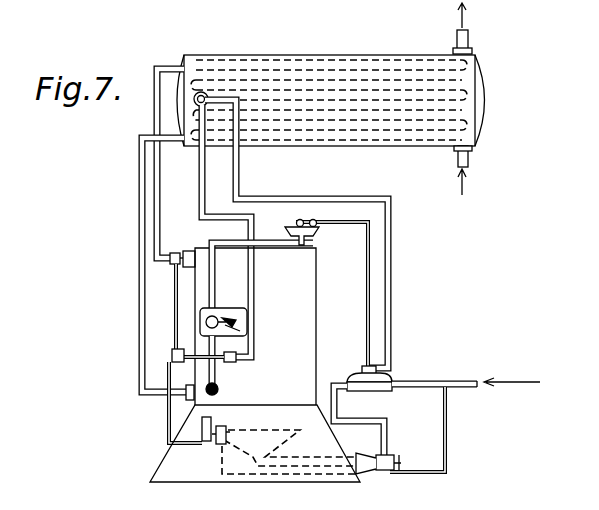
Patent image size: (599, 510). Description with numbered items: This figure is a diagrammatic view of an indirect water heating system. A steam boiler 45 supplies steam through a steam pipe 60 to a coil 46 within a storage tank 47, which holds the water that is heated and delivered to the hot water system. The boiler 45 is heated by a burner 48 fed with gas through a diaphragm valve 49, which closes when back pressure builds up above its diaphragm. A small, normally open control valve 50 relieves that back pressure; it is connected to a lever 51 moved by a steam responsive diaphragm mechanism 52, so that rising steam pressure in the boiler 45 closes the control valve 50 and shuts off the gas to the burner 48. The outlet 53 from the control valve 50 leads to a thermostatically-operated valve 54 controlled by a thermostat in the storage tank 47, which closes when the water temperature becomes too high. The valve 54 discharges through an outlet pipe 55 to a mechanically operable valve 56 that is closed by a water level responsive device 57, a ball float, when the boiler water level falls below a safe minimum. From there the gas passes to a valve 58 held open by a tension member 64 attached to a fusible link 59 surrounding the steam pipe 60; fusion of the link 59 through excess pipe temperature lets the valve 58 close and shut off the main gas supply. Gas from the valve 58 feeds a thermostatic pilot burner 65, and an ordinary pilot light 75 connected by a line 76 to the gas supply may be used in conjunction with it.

The steam boiler 45 is at (310, 310).
The coil 46 is at (322, 76).
The storage tank 47 is at (402, 55).
The burner 48 is at (270, 436).
The diaphragm valve 49 is at (398, 381).
The control valve 50 is at (367, 368).
The lever 51 is at (324, 222).
The steam responsive diaphragm mechanism 52 is at (311, 236).
The outlet 53 is at (390, 292).
The thermostatically-operated valve 54 is at (205, 93).
The outlet pipe 55 is at (201, 166).
The mechanically operable valve 56 is at (232, 362).
The water level responsive device 57 is at (227, 312).
The valve 58 is at (172, 356).
The fusible link 59 is at (174, 263).
The steam pipe 60 is at (158, 237).
The tension member 64 is at (174, 312).
The pilot burner 65 is at (201, 419).
The pilot light 75 is at (218, 445).
The line 76 is at (406, 472).